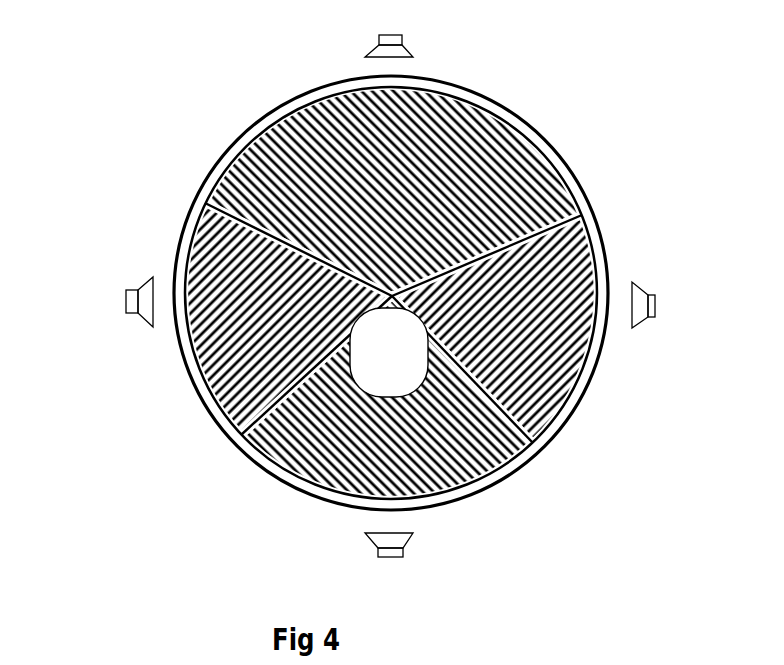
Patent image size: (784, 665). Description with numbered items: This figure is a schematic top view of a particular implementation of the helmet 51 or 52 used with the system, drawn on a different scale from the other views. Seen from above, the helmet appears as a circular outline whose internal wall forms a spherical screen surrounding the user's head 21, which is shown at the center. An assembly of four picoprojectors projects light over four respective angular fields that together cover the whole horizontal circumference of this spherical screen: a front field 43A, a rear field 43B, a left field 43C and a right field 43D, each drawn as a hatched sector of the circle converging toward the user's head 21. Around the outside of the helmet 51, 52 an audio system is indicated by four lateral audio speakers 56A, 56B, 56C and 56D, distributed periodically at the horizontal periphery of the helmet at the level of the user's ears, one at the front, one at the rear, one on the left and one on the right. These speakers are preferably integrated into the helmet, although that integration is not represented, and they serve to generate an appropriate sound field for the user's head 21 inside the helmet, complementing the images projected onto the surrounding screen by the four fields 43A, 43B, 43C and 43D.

The user's head 21 is at (406, 367).
The front field 43A is at (490, 146).
The rear field 43B is at (297, 450).
The left field 43C is at (214, 330).
The right field 43D is at (560, 366).
The helmet 51 is at (150, 141).
The helmet 52 is at (349, 274).
The lateral audio speaker 56A is at (403, 45).
The lateral audio speaker 56B is at (409, 541).
The lateral audio speaker 56C is at (145, 276).
The lateral audio speaker 56D is at (642, 283).